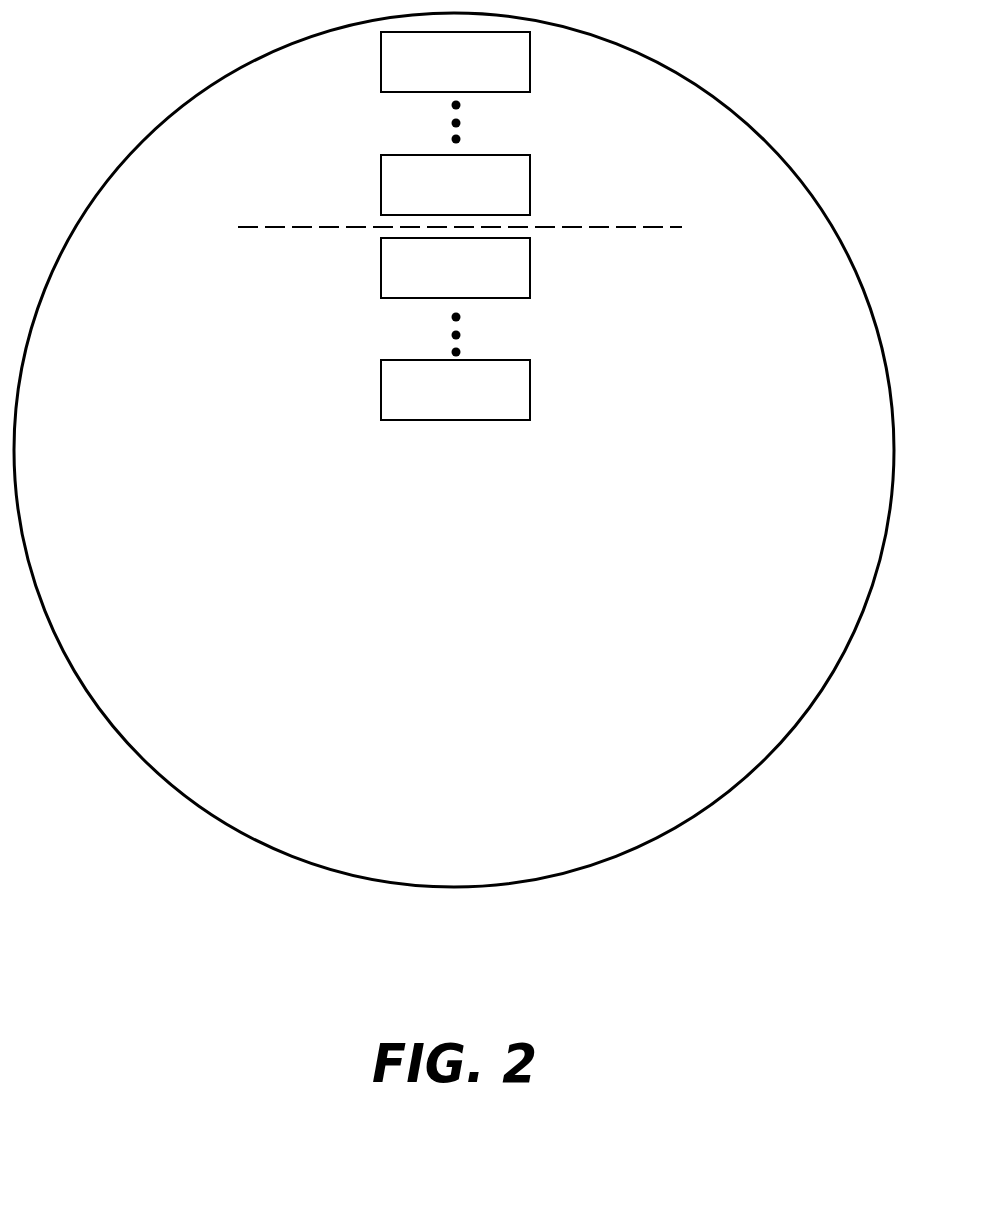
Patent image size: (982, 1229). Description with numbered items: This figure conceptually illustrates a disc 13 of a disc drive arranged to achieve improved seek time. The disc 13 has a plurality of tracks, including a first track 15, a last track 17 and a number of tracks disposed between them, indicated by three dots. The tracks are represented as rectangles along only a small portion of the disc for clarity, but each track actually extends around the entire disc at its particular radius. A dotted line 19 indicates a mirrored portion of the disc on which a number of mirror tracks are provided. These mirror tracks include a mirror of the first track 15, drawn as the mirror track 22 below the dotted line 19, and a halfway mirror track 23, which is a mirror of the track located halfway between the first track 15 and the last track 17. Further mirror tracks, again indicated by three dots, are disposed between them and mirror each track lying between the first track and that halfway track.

The disc 13 is at (683, 72).
The TRACK_0 15 is at (530, 89).
The TRACK_N 17 is at (530, 185).
The dotted line 19 is at (620, 227).
The track 0 of second zone 22 is at (530, 268).
The TRACK_N/2 23 is at (530, 385).